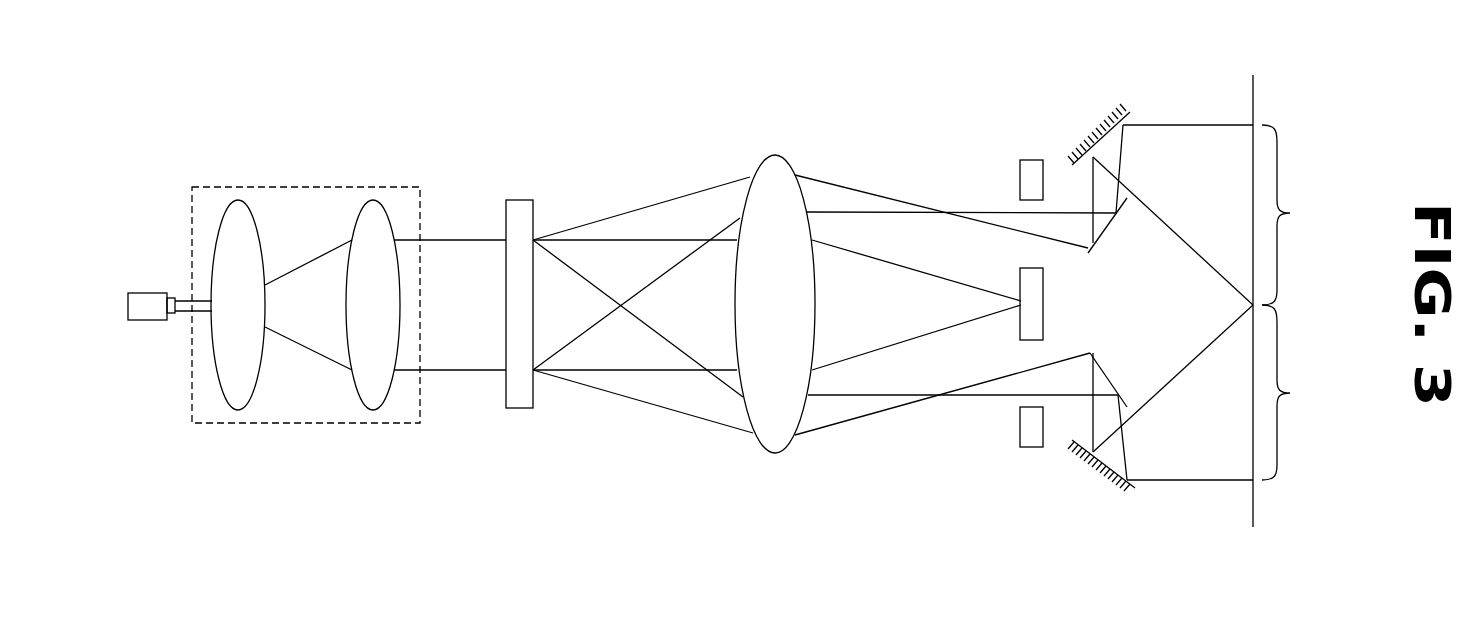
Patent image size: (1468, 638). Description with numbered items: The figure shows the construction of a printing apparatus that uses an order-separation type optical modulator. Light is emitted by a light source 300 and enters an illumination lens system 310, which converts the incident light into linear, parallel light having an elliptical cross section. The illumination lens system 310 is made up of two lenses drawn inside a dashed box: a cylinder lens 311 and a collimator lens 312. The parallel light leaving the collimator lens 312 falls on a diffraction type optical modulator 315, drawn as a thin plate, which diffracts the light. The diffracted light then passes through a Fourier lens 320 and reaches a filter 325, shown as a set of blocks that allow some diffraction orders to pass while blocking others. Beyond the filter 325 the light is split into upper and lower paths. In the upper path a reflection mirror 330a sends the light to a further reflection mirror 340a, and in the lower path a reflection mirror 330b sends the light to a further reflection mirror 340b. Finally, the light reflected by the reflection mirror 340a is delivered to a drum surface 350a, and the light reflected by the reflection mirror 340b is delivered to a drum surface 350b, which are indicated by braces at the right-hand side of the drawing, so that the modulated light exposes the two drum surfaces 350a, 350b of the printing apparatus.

The light source 300 is at (143, 292).
The illumination lens system 310 is at (304, 187).
The cylinder lens 311 is at (237, 200).
The collimator lens 312 is at (373, 200).
The diffraction type optical modulator 315 is at (518, 200).
The Fourier lens 320 is at (778, 162).
The filter 325 is at (1032, 160).
The reflection mirror 330a is at (1108, 230).
The reflection mirror 330b is at (1110, 378).
The reflection mirror 340a is at (1136, 108).
The reflection mirror 340b is at (1138, 495).
The drum surface 350a is at (1304, 215).
The drum surface 350b is at (1305, 392).